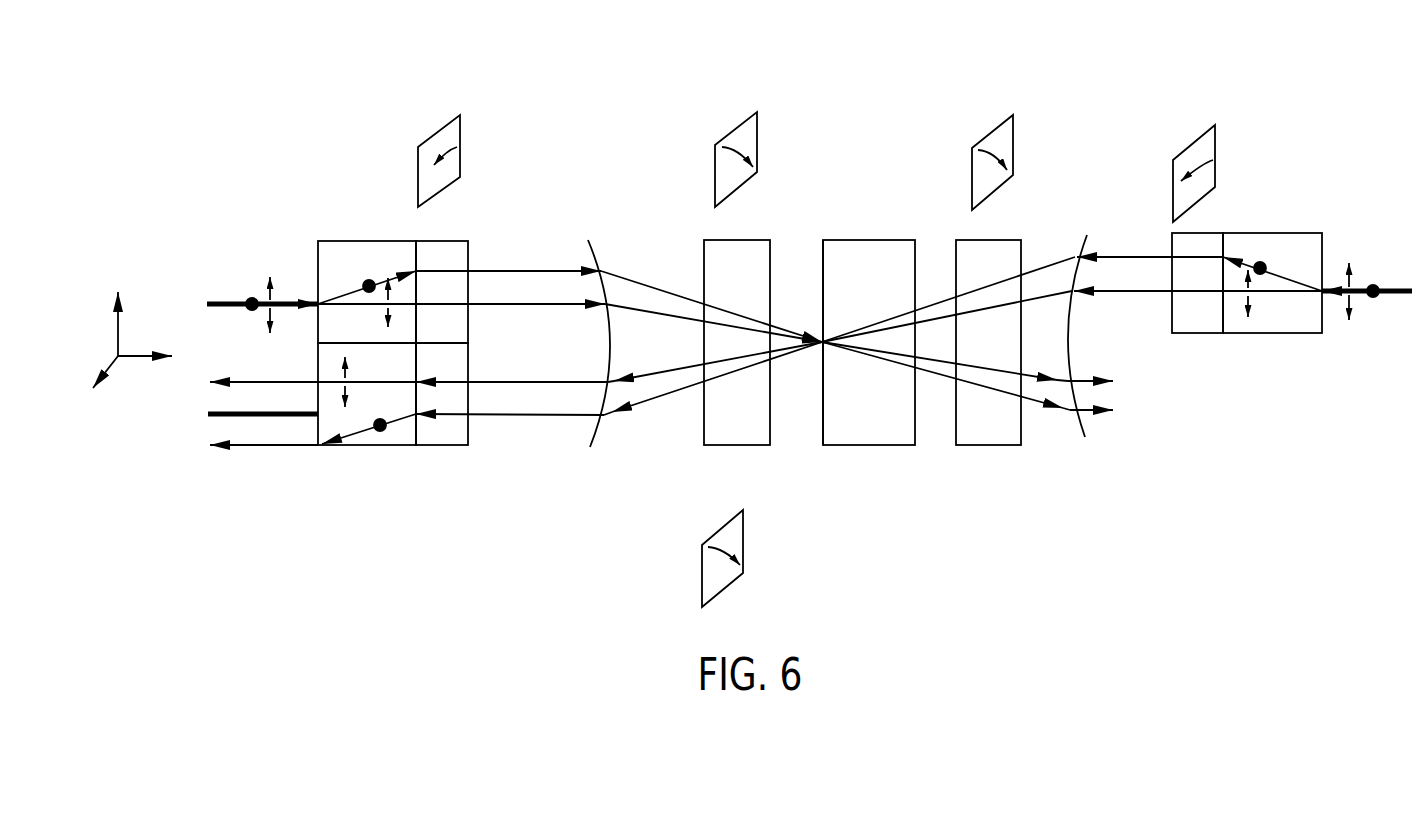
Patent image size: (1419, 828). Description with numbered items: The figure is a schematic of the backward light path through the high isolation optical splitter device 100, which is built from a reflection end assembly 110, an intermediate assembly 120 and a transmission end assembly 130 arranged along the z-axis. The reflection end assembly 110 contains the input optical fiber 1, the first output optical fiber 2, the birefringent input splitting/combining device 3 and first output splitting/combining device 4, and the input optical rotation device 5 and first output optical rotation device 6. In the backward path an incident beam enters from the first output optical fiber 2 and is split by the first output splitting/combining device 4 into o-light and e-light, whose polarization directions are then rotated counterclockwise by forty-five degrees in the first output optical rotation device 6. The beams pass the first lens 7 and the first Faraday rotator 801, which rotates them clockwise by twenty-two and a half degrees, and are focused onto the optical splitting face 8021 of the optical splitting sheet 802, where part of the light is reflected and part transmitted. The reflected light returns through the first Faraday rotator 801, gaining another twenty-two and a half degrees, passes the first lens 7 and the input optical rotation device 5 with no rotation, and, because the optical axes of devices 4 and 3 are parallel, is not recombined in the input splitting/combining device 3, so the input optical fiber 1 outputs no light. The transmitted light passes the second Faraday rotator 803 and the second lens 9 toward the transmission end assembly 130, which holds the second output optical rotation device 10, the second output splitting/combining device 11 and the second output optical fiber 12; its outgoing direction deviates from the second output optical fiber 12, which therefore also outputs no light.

The high isolation optical splitter device 100 is at (245, 132).
The reflection end assembly 110 is at (346, 515).
The intermediate assembly 120 is at (908, 535).
The transmission end assembly 130 is at (1303, 435).
The input optical fiber 1 is at (213, 418).
The first output optical fiber 2 is at (240, 301).
The input splitting/combining device 3 is at (333, 416).
The first output splitting/combining device 4 is at (358, 262).
The input optical rotation device 5 is at (447, 431).
The first output optical rotation device 6 is at (453, 262).
The first lens 7 is at (592, 447).
The first Faraday rotator 801 is at (732, 446).
The optical splitting sheet 802 is at (873, 446).
The optical splitting face 8021 is at (823, 273).
The second Faraday rotator 803 is at (992, 446).
The second lens 9 is at (1077, 446).
The second output optical rotation device 10 is at (1205, 323).
The second output splitting/combining device 11 is at (1285, 323).
The second output optical fiber 12 is at (1412, 292).